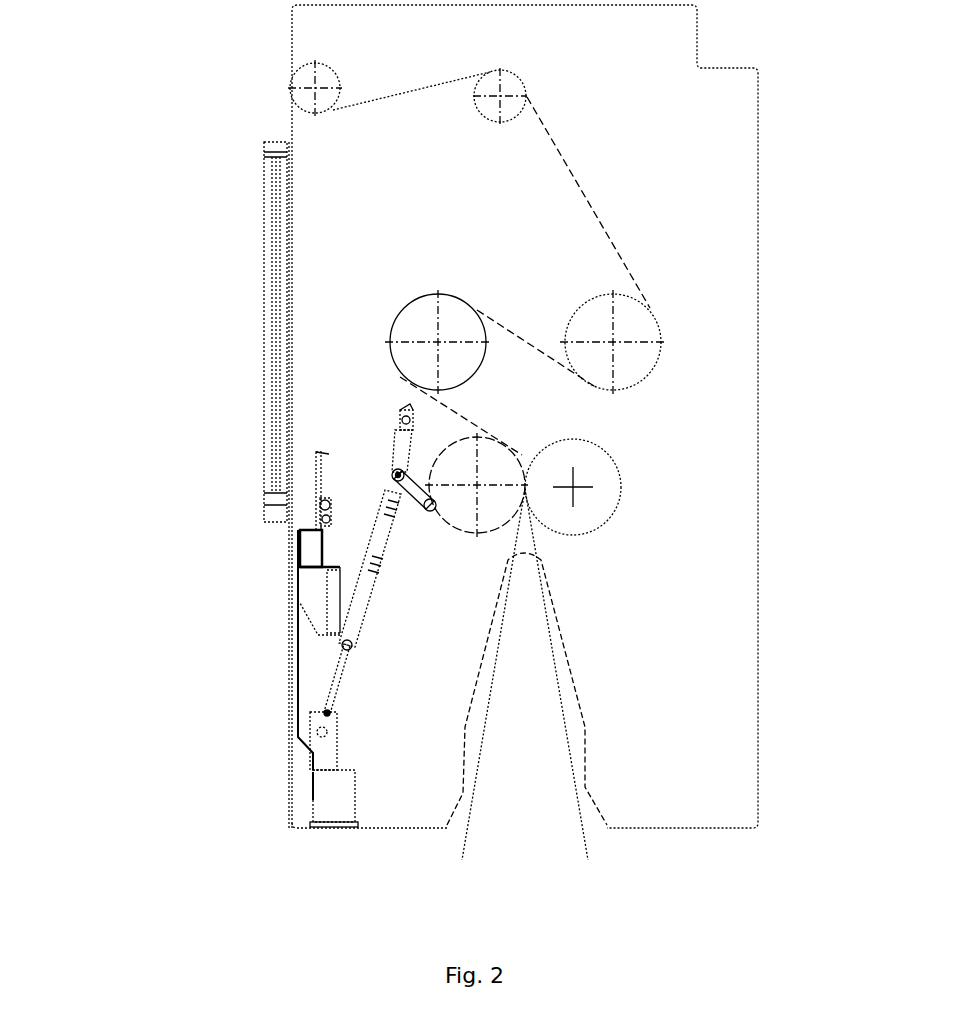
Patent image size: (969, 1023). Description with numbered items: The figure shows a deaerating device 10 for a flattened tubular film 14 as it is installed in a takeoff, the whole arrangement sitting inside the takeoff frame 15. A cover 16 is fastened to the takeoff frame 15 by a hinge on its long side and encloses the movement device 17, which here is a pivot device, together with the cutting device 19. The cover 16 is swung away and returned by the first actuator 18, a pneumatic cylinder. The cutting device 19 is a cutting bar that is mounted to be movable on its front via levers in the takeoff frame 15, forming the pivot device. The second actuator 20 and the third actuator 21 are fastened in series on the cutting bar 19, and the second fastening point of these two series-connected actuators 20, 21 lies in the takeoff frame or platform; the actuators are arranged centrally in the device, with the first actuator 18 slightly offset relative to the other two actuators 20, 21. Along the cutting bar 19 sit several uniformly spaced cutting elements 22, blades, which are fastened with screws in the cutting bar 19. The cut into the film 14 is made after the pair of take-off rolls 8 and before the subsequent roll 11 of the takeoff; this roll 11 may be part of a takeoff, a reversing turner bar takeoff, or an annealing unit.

The pair of take-off rolls 8 is at (600, 473).
The deaerating device 10 is at (207, 252).
The subsequent roll 11 is at (408, 313).
The flattened tubular film 14 is at (468, 417).
The takeoff frame 15 is at (705, 305).
The cover 16 is at (305, 475).
The movement device 17 is at (398, 450).
The actuator 1 18 is at (318, 593).
The cutting device 19 is at (400, 422).
The actuator 2 20 is at (350, 598).
The actuator 3 21 is at (375, 527).
The cutting elements 22 is at (405, 408).